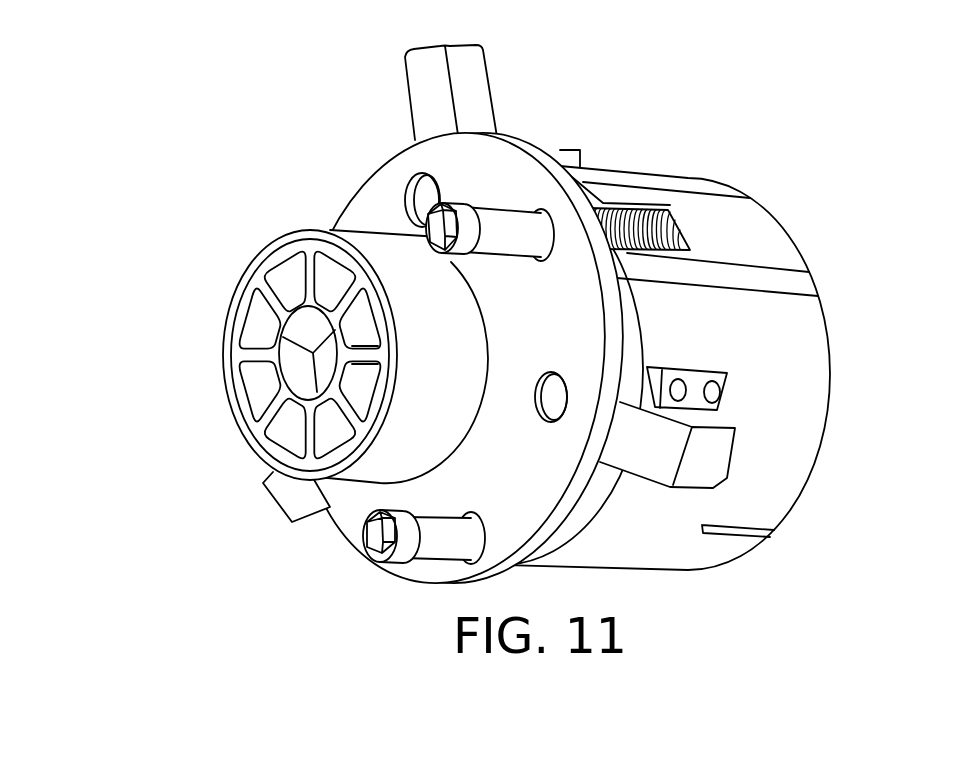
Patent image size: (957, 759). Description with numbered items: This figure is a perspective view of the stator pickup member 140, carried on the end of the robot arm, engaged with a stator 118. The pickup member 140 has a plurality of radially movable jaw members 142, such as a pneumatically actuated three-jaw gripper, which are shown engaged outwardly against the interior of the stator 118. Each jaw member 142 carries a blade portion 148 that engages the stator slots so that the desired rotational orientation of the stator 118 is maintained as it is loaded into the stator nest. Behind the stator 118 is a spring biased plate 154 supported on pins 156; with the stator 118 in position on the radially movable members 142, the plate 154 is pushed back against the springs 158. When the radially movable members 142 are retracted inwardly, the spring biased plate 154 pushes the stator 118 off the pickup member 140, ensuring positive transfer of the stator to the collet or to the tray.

The stator pickup member 140 is at (227, 120).
The stator 118 is at (385, 247).
The radially movable jaw member 142 is at (222, 330).
The blade portion 148 is at (304, 300).
The spring biased plate 154 is at (483, 158).
The pin 156 is at (466, 216).
The spring 158 is at (645, 220).